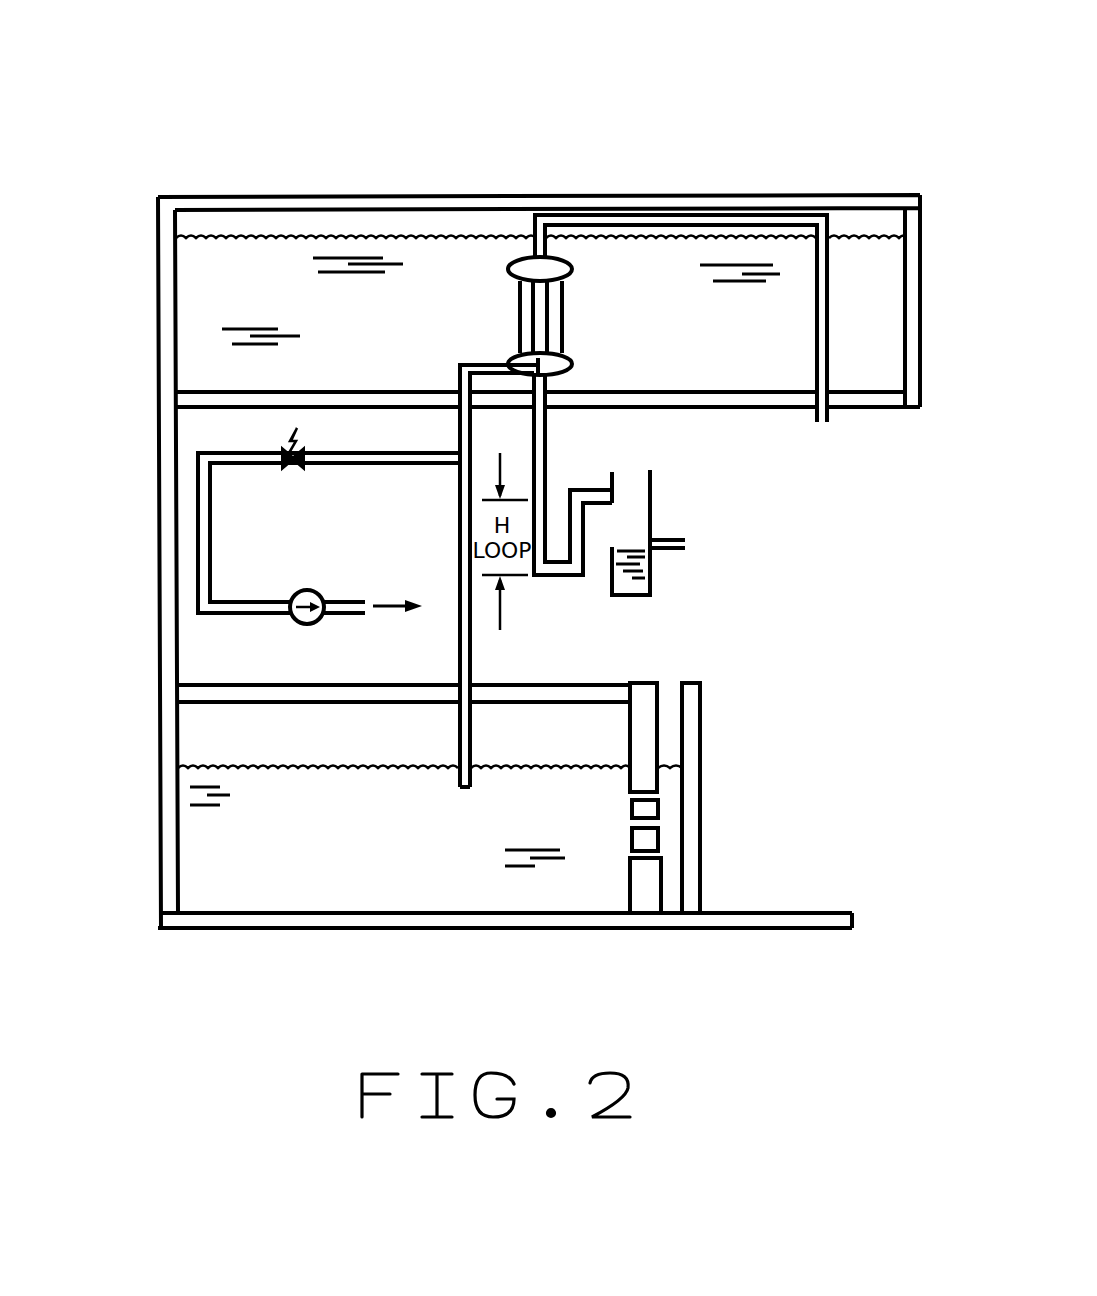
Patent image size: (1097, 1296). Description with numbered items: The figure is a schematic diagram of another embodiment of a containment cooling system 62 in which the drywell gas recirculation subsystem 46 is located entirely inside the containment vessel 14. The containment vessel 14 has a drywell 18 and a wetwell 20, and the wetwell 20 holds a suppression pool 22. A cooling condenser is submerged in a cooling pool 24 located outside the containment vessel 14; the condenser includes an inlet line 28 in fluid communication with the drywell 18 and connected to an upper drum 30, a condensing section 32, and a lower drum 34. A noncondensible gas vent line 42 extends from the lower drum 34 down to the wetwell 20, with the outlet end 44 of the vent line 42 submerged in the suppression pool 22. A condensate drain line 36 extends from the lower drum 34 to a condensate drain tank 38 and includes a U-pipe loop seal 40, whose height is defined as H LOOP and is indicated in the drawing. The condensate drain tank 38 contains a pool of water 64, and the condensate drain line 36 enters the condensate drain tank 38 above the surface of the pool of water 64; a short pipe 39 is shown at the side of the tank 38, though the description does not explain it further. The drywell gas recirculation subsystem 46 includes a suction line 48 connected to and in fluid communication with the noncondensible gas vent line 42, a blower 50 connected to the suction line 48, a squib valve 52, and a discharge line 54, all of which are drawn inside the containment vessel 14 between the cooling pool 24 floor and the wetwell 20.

The containment vessel 14 is at (160, 696).
The drywell 18 is at (922, 728).
The wetwell 20 is at (358, 752).
The suppression pool 22 is at (333, 859).
The cooling pool 24 is at (396, 341).
The inlet line 28 is at (830, 410).
The upper drum 30 is at (573, 268).
The condensing section 32 is at (563, 323).
The lower drum 34 is at (573, 368).
The condensate drain line 36 is at (546, 442).
The condensate drain tank 38 is at (651, 494).
The pipe 39 is at (681, 549).
The U-pipe loop seal 40 is at (578, 586).
The noncondensible gas vent line 42 is at (472, 660).
The outlet end 44 is at (472, 778).
The drywell gas recirculation subsystem 46 is at (296, 637).
The suction line 48 is at (368, 463).
The blower 50 is at (313, 621).
The squib valve 52 is at (291, 470).
The discharge line 54 is at (343, 602).
The containment cooling system 62 is at (612, 130).
The pool of water 64 is at (633, 585).